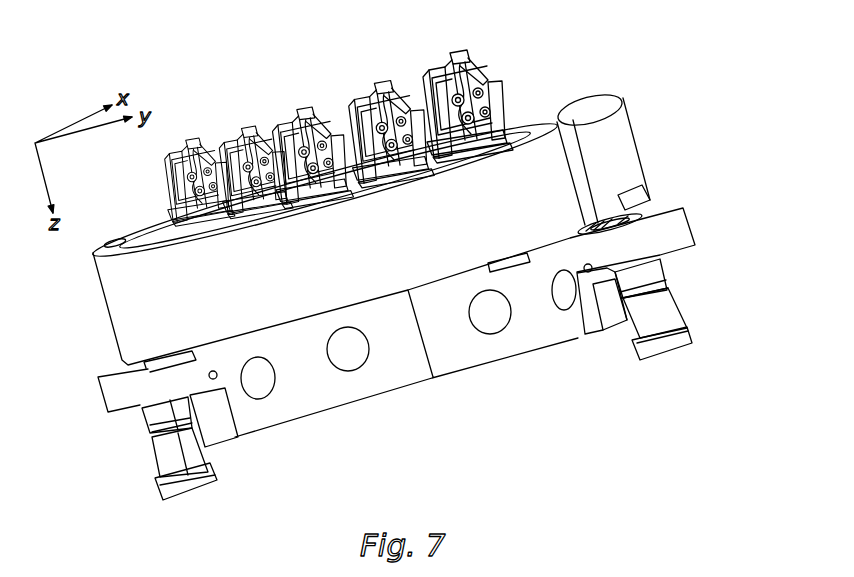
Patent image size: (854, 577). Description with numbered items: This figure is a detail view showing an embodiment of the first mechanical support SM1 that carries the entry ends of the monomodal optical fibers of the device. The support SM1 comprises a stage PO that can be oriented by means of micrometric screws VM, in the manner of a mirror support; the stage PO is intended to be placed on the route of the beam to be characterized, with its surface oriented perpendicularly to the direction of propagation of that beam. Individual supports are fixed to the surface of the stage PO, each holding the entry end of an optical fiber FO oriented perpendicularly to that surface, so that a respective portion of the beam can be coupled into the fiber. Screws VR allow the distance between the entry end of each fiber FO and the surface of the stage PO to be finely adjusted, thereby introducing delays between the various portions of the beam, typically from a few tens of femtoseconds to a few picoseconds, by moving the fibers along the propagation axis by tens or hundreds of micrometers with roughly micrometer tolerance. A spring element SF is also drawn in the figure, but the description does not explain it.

The optical fiber FO is at (448, 64).
The spring finger SF is at (485, 72).
The screws VR is at (492, 95).
The stage PO is at (549, 117).
The first mechanical support SM1 is at (673, 127).
The micrometric screws VM is at (657, 313).